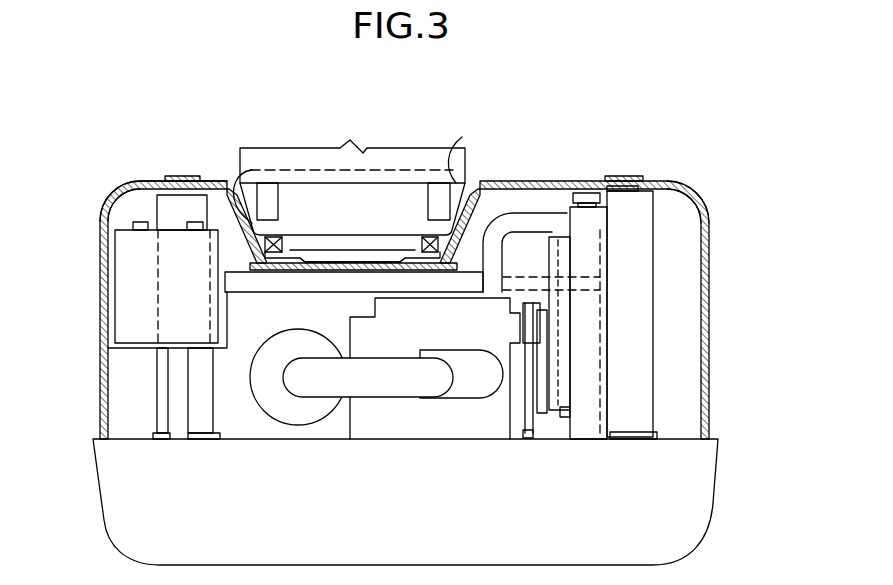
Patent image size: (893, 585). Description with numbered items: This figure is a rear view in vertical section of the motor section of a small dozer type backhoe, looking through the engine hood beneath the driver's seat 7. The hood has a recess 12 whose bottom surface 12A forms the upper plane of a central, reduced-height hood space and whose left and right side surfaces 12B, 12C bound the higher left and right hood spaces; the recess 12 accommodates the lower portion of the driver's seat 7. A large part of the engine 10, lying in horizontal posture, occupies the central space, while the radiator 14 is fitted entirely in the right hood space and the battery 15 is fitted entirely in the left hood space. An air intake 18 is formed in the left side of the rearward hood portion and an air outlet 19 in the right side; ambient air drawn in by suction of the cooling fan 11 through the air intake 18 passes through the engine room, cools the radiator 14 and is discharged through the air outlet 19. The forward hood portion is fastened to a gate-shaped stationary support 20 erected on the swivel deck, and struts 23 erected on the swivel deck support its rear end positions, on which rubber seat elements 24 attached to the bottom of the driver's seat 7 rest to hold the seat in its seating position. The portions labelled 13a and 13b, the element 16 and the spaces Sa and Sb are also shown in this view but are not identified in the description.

The driver's seat 7 is at (458, 158).
The engine 10 is at (478, 425).
The cooling fan 11 is at (542, 262).
The recess 12 is at (352, 252).
The bottom surface 12A is at (372, 260).
The left side surface 12B is at (228, 197).
The right side surface 12C is at (450, 173).
The right cover portion 13a is at (685, 181).
The left cover portion 13b is at (118, 187).
The radiator 14 is at (592, 407).
The battery 15 is at (125, 250).
The tab 16 is at (185, 177).
The air intake 18 is at (92, 284).
The air outlet 19 is at (713, 305).
The gate-shaped stationary support 20 is at (257, 292).
The struts 23 is at (165, 209).
The rubber seat elements 24 is at (308, 257).
The right space Sa is at (663, 215).
The left space Sb is at (145, 203).